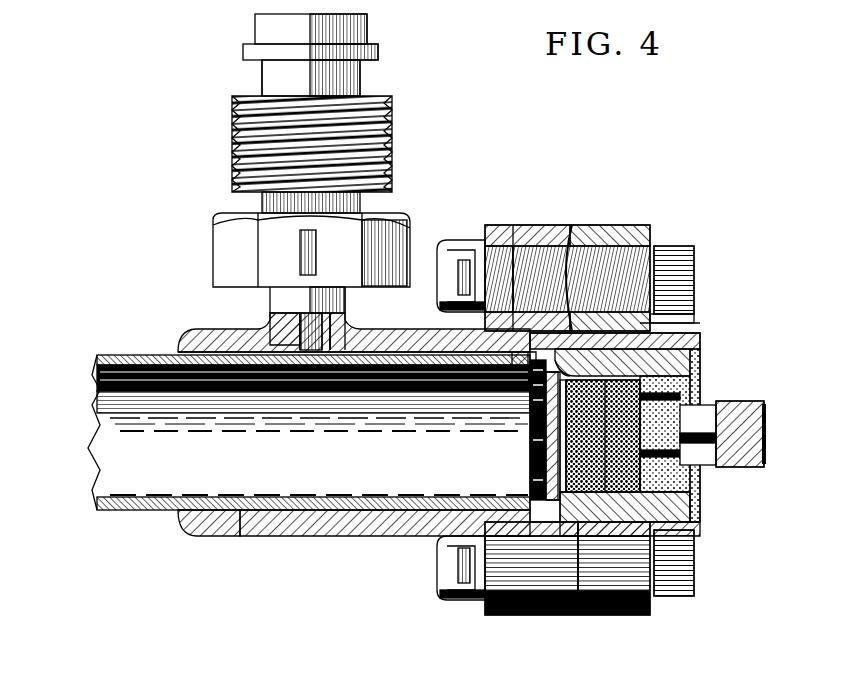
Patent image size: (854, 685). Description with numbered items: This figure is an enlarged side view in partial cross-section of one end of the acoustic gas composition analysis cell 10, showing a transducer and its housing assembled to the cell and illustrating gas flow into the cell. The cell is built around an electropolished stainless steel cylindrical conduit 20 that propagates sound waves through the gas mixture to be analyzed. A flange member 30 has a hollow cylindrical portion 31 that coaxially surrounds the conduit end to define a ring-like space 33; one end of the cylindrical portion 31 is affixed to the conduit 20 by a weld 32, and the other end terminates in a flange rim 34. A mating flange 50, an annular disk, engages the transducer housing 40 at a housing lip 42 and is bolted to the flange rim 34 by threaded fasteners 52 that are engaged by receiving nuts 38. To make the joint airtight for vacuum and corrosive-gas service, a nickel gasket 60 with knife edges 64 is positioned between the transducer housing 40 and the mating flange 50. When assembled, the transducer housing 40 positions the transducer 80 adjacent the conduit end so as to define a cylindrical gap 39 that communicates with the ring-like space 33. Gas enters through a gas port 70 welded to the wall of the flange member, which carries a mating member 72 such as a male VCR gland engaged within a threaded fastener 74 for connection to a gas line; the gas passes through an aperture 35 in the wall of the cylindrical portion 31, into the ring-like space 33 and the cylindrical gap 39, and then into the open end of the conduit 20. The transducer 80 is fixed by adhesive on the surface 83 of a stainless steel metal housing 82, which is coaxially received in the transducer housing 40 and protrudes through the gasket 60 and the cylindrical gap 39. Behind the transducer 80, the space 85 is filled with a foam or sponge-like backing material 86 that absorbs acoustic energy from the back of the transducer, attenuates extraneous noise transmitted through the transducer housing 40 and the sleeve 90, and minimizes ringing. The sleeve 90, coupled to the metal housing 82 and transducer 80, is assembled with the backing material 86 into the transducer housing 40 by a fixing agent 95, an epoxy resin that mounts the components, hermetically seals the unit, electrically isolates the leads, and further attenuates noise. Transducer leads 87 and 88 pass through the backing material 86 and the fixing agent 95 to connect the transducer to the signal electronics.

The acoustic gas composition analysis cell 10 is at (58, 364).
The cylindrical conduit 20 is at (112, 458).
The flange member 30 is at (324, 456).
The hollow cylindrical portion 31 is at (180, 540).
The weld 32 is at (185, 344).
The ring-like space 33 is at (300, 540).
The flange rim 34 is at (528, 225).
The aperture 35 is at (262, 322).
The receiving nut 38 is at (450, 600).
The cylindrical gap 39 is at (527, 459).
The transducer housing 40 is at (700, 340).
The housing lip 42 is at (665, 325).
The mating flange 50 is at (598, 226).
The threaded fastener 52 is at (695, 252).
The gasket 60 is at (572, 228).
The knife edge 64 is at (516, 228).
The gas port 70 is at (306, 159).
The mating member 72 is at (258, 33).
The threaded fastener 74 is at (232, 130).
The transducer 80 is at (540, 444).
The metal housing 82 is at (650, 498).
The surface 83 is at (525, 485).
The space 85 is at (512, 407).
The backing material 86 is at (645, 470).
The transducer lead 87 is at (578, 616).
The transducer lead 88 is at (692, 416).
The sleeve 90 is at (700, 362).
The fixing agent 95 is at (703, 515).